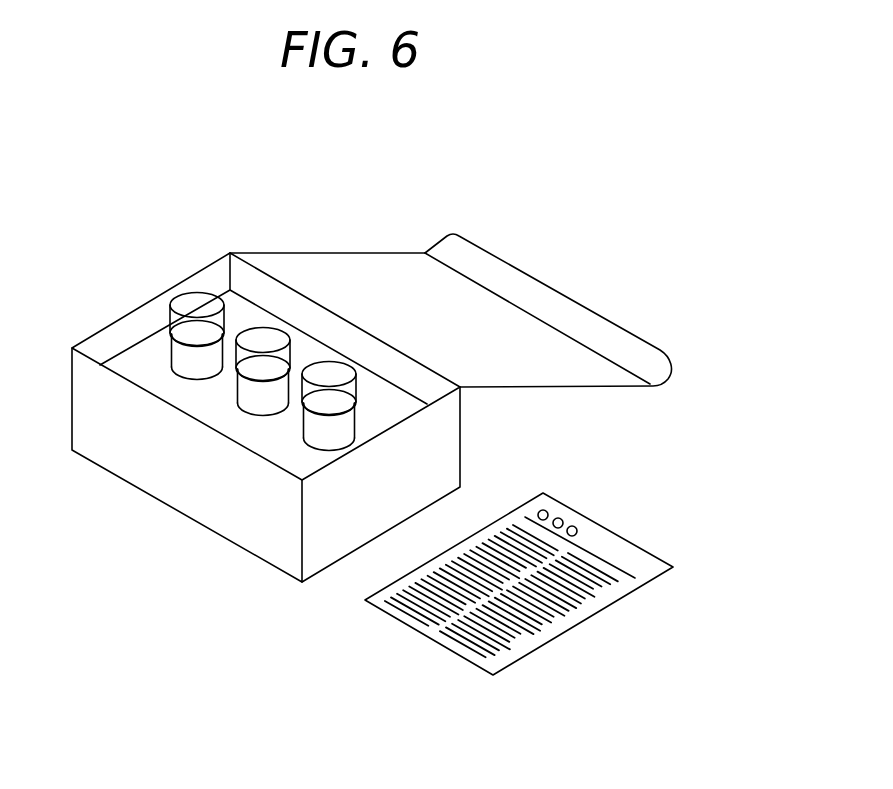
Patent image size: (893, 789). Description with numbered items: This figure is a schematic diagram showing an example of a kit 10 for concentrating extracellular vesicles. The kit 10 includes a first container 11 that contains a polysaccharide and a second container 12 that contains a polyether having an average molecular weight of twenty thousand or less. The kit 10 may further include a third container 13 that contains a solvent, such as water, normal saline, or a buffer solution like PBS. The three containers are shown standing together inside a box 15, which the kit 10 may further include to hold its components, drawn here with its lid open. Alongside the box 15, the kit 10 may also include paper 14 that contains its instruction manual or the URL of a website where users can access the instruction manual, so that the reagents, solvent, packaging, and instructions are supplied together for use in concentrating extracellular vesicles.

The kit 10 is at (707, 272).
The first container 11 is at (177, 357).
The second container 12 is at (233, 392).
The third container 13 is at (310, 432).
The paper 14 is at (365, 600).
The box 15 is at (448, 441).